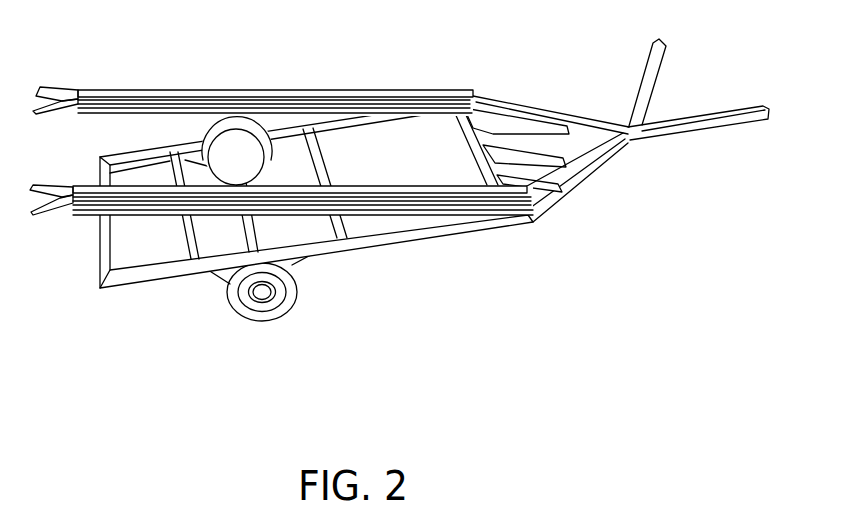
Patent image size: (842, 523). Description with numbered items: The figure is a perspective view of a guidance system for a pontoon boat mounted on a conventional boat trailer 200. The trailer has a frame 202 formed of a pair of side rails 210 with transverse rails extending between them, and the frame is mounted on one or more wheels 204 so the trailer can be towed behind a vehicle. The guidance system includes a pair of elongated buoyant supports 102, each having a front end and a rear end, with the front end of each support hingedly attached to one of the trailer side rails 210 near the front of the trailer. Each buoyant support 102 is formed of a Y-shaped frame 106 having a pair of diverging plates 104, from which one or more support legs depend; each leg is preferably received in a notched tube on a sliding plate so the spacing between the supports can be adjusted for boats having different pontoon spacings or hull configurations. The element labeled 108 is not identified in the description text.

The elongated buoyant support 102 is at (253, 66).
The diverging plate 104 is at (57, 98).
The Y-shaped frame 106 is at (387, 90).
The lower rail 108 is at (467, 216).
The boat trailer 200 is at (702, 112).
The frame 202 is at (545, 125).
The wheel 204 is at (277, 321).
The side rail 210 is at (155, 280).